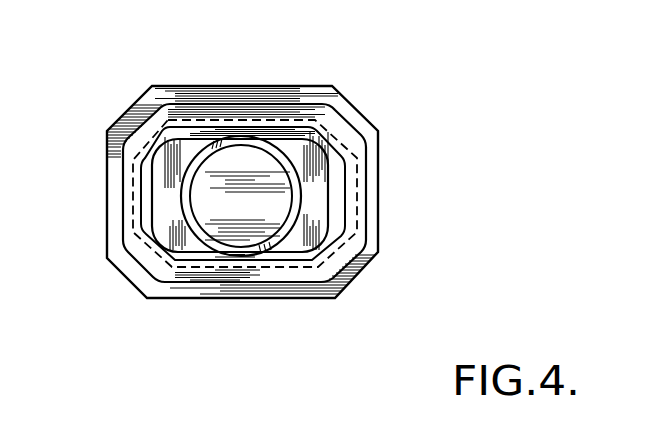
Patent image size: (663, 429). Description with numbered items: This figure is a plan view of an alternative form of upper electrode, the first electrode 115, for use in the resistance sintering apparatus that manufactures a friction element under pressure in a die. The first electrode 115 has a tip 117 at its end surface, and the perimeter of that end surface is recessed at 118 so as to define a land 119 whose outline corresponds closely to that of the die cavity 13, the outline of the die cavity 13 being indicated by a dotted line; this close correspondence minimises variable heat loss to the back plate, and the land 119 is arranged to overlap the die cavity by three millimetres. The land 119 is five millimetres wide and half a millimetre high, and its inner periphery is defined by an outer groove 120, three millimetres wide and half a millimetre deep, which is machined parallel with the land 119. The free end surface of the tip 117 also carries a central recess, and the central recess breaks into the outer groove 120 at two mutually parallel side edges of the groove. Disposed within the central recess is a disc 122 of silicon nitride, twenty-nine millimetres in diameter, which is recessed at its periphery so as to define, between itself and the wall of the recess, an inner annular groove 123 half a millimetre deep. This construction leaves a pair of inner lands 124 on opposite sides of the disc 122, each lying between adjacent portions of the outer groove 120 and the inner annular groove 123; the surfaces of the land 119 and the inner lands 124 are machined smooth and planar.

The first electrode 115 is at (372, 107).
The tip 117 is at (282, 86).
The recess 118 is at (125, 255).
The land 119 is at (310, 270).
The outer groove 120 is at (320, 247).
The disc 122 is at (227, 165).
The inner annular groove 123 is at (298, 208).
The inner lands 124 is at (170, 160).
The die cavity 13 is at (150, 296).